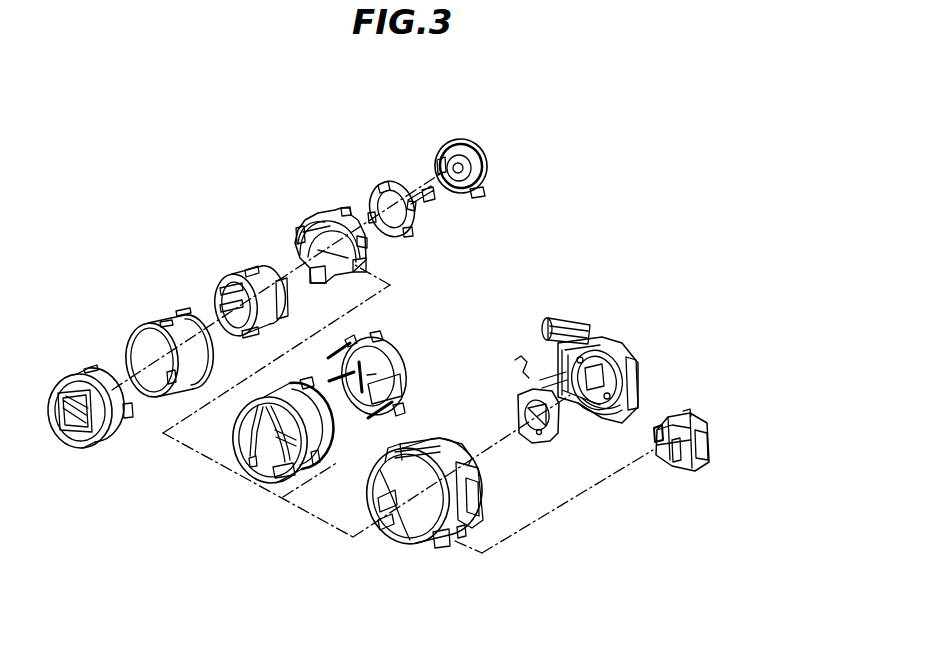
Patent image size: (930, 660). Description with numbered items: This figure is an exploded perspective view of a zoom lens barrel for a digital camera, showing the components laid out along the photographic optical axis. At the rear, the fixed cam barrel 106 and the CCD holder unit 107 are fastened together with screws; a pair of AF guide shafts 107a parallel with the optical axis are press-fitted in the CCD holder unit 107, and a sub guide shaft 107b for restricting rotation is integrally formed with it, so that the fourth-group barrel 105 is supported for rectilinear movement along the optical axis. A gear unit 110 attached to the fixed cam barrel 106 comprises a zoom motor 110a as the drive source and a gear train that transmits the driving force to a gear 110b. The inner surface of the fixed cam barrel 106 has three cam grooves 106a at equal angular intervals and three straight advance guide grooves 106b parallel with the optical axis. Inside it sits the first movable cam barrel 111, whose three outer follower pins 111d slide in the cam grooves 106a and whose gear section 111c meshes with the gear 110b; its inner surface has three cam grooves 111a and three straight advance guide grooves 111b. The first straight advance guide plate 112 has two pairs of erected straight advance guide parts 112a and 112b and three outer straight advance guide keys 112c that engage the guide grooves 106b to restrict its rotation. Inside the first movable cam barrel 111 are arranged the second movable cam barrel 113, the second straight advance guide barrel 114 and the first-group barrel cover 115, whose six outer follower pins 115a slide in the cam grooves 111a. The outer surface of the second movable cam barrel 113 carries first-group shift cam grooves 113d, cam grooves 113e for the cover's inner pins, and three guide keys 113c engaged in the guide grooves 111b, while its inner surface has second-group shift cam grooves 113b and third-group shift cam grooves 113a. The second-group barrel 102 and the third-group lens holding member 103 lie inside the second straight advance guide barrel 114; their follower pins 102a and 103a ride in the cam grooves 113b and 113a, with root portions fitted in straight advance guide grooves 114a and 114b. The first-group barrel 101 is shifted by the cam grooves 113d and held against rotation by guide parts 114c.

The first-group barrel 101 is at (85, 370).
The second-group barrel 102 is at (380, 184).
The follower pins 102a is at (425, 192).
The third-group lens holding member 103 is at (440, 150).
The follower pins 103a is at (484, 193).
The fourth-group barrel 105 is at (545, 438).
The fixed cam barrel 106 is at (452, 522).
The cam grooves 106a is at (405, 542).
The straight advance guide grooves 106b is at (393, 520).
The CCD holder unit 107 is at (620, 354).
The AF guide shafts 107a is at (573, 318).
The sub guide shaft 107b is at (583, 400).
The gear unit 110 is at (705, 463).
The zoom motor 110a is at (670, 452).
The gear 110b is at (658, 432).
The first movable cam barrel 111 is at (325, 470).
The cam grooves 111a is at (250, 462).
The straight advance guide grooves 111b is at (284, 470).
The gear section 111c is at (320, 455).
The follower pins 111d is at (305, 384).
The first straight advance guide plate 112 is at (402, 372).
The straight advance guide parts 112a is at (400, 412).
The straight advance guide parts 112b is at (398, 378).
The straight advance guide keys 112c is at (376, 340).
The second movable cam barrel 113 is at (313, 226).
The third-group shift cam grooves 113a is at (313, 272).
The second-group shift cam grooves 113b is at (302, 250).
The guide keys 113c is at (340, 212).
The first-group shift cam grooves 113d is at (366, 252).
The cam grooves 113e is at (368, 241).
The second straight advance guide barrel 114 is at (212, 282).
The straight advance guide grooves 114a is at (225, 282).
The straight advance guide grooves 114b is at (270, 283).
The guide parts 114c is at (207, 282).
The first-group barrel cover 115 is at (157, 316).
The follower pins 115a is at (178, 313).